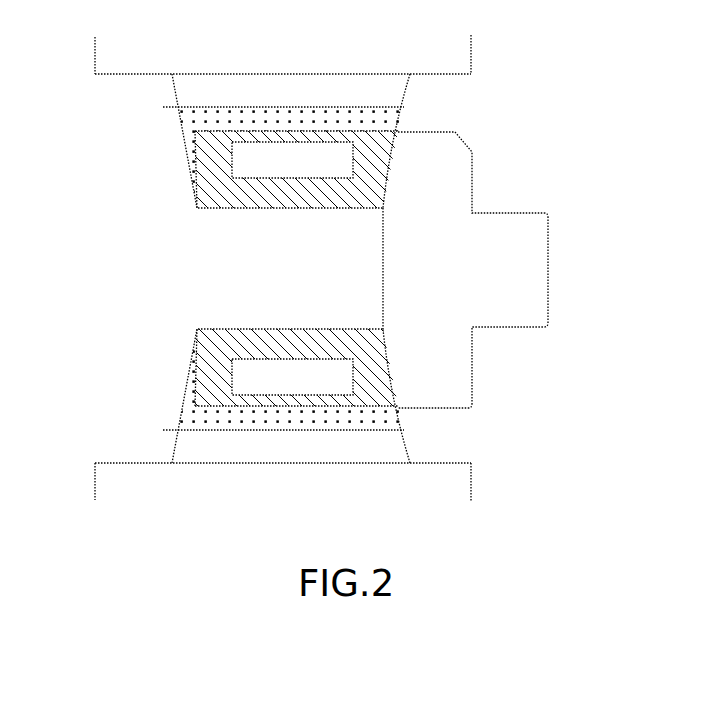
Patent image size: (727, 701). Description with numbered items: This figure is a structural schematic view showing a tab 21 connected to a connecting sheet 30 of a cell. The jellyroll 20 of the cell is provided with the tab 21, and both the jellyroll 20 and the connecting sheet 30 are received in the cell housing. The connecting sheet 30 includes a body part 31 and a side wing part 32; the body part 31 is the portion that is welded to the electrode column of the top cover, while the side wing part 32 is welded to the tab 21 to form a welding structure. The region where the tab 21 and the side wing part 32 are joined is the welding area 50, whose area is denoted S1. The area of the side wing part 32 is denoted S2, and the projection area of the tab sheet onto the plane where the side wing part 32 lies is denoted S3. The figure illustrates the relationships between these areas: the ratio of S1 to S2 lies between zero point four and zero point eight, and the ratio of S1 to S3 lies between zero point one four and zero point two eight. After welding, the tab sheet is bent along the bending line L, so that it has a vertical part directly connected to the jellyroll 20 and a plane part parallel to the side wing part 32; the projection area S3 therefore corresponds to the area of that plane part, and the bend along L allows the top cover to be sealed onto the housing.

The jellyroll 20 is at (170, 57).
The tab 21 is at (226, 268).
The connecting sheet 30 is at (580, 65).
The body part 31 is at (510, 262).
The side wing part 32 is at (348, 261).
The welding area 50 is at (292, 276).
The bending line L is at (275, 266).
The area of the welding area S1 is at (292, 268).
The area of the side wing part S2 is at (296, 268).
The projection area of the first tab sheet S3 is at (291, 269).